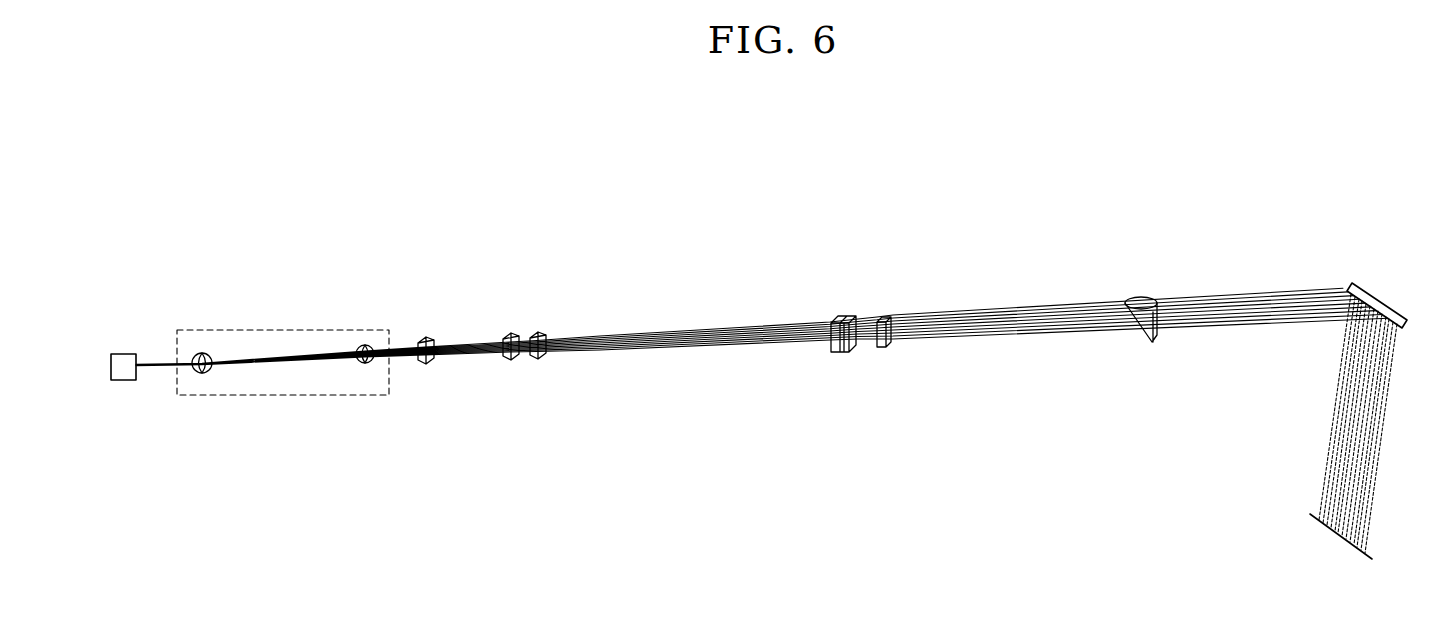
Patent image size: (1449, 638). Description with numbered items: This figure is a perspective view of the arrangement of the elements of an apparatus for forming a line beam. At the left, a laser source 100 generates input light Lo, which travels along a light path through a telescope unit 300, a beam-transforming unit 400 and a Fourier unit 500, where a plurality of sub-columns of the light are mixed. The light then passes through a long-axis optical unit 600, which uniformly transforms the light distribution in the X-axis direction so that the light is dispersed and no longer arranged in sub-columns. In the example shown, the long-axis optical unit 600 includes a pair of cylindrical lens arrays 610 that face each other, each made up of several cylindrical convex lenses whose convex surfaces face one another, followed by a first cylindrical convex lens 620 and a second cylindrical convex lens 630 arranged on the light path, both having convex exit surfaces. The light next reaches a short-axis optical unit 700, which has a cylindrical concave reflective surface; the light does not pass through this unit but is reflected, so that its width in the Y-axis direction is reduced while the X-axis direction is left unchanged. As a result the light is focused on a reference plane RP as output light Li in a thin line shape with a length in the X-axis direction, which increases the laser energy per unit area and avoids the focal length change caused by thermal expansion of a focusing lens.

The laser source 100 is at (124, 352).
The input light Lo is at (158, 366).
The telescope unit 300 is at (283, 398).
The beam-transforming unit 400 is at (430, 362).
The Fourier unit 500 is at (540, 360).
The long-axis optical unit 600 is at (1123, 245).
The pair of cylindrical lens arrays 610 is at (848, 318).
The first cylindrical convex lens 620 is at (893, 320).
The second cylindrical convex lens 630 is at (1140, 302).
The short-axis optical unit 700 is at (1375, 292).
The output light Li is at (1382, 438).
The reference plane RP is at (1312, 517).